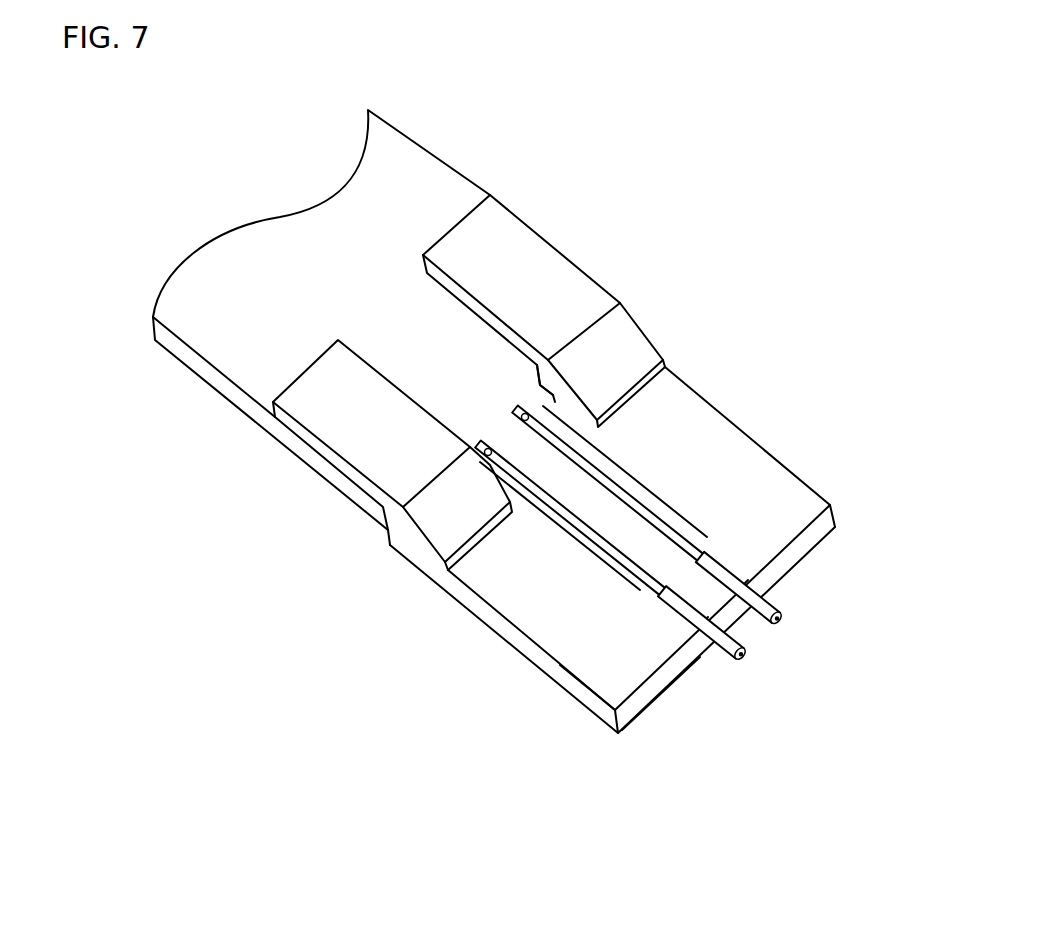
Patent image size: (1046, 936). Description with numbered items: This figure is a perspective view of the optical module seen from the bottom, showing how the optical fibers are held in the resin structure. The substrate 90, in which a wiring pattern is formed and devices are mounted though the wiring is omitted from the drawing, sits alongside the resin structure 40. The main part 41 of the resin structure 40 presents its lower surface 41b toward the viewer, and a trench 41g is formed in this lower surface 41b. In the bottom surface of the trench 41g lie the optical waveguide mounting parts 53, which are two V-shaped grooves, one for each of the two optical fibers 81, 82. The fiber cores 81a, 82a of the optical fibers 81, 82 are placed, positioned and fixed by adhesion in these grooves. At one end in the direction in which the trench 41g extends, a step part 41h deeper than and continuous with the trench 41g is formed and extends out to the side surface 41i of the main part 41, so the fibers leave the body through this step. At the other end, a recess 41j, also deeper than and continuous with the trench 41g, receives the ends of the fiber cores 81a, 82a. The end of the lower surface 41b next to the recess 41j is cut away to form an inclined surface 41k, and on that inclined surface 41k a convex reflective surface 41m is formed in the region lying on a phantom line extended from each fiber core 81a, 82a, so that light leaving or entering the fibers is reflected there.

The substrate 90 is at (200, 368).
The resin structure 40 is at (468, 602).
The main part 41 is at (654, 486).
The lower surface 41b is at (592, 678).
The side surface 41i is at (657, 685).
The trench 41g is at (660, 510).
The step part 41h is at (712, 597).
The recess 41j is at (556, 394).
The inclined surface 41k is at (550, 392).
The convex reflective surface 41m is at (488, 449).
The optical waveguide mounting part 53 is at (593, 527).
The optical fiber 81 is at (642, 582).
The fiber core 81a is at (640, 578).
The optical fiber 82 is at (691, 520).
The fiber core 82a is at (685, 515).